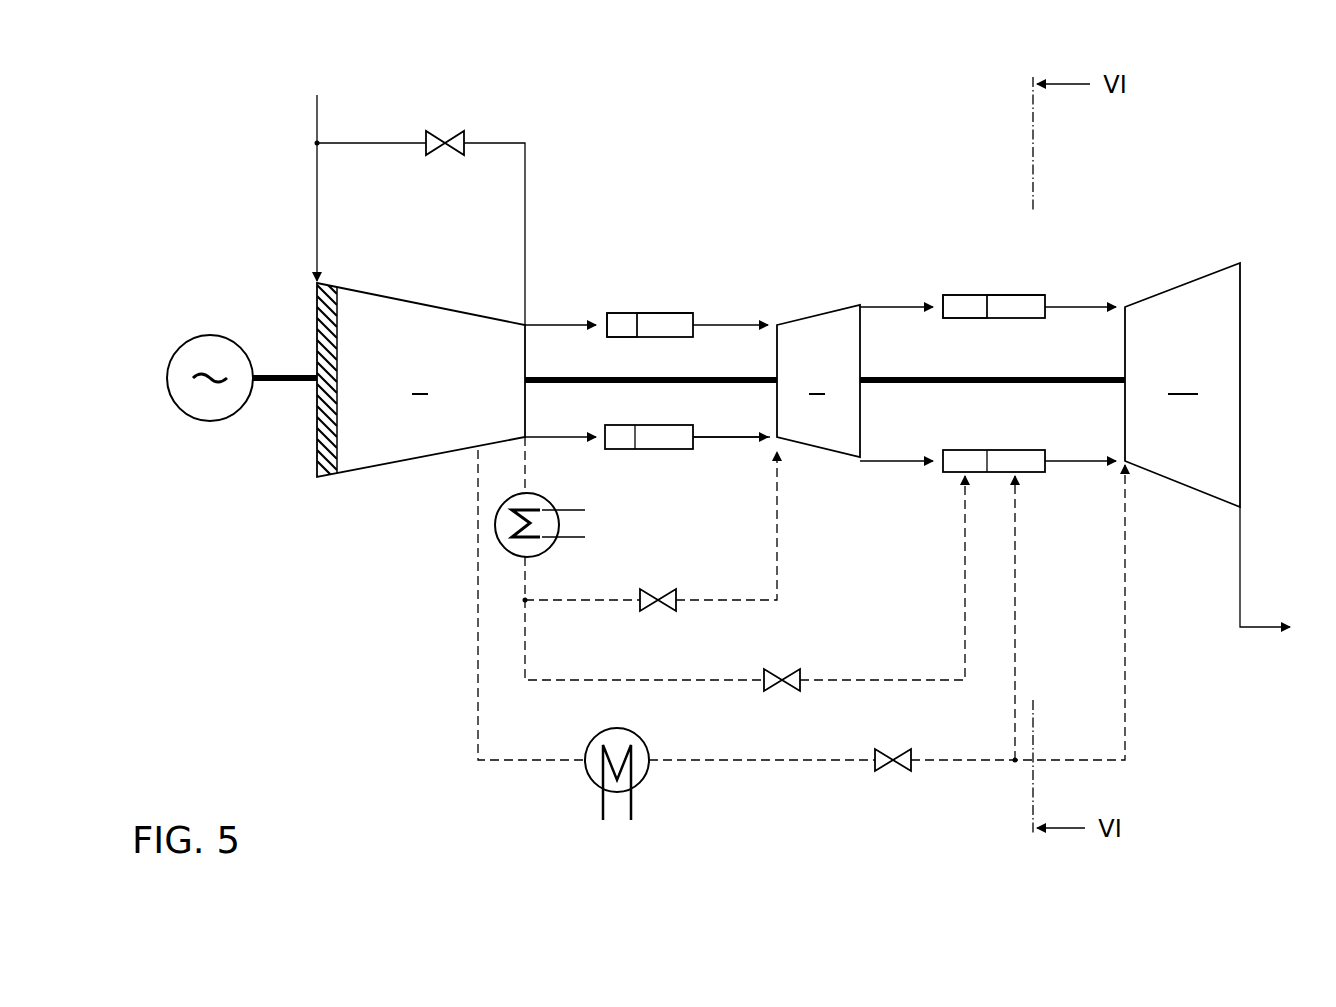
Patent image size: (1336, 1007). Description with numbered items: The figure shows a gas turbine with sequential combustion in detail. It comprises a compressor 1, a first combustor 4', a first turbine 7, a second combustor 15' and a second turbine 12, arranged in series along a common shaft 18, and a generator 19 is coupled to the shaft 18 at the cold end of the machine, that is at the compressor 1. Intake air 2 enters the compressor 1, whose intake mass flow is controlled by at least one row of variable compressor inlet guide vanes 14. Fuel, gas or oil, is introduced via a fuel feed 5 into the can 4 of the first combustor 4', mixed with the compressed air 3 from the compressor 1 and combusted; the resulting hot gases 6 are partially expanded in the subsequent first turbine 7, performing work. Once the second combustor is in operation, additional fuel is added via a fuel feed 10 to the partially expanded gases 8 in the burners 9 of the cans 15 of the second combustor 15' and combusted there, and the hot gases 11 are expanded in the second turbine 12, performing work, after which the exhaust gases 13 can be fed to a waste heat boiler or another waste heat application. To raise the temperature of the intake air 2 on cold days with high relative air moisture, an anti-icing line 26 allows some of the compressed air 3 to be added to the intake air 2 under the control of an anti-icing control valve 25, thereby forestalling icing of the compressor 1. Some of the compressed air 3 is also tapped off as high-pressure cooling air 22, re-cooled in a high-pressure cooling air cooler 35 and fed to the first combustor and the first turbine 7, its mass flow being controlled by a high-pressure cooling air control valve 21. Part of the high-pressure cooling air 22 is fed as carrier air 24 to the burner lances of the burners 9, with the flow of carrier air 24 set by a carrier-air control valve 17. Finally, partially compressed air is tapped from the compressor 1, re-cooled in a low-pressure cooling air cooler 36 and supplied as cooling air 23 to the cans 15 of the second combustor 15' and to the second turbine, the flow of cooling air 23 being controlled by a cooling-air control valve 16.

The compressor 1 is at (421, 380).
The intake air 2 is at (315, 203).
The compressed air 3 is at (567, 440).
The can 4 is at (699, 293).
The first combustor 4' is at (696, 231).
The fuel feed 5 is at (651, 310).
The hot gases 6 is at (730, 437).
The first turbine 7 is at (818, 381).
The partially expanded gases 8 is at (897, 461).
The burners 9 is at (630, 325).
The fuel feed 10 is at (965, 292).
The hot gases 11 is at (1077, 461).
The second turbine 12 is at (1182, 385).
The exhaust gases 13 is at (1288, 575).
The variable compressor inlet guide vanes 14 is at (328, 357).
The cans 15 is at (1035, 343).
The second combustor 15' is at (1052, 228).
The cooling-air control valve 16 is at (893, 768).
The carrier-air control valve 17 is at (782, 688).
The shaft 18 is at (282, 384).
The generator 19 is at (210, 400).
The high-pressure cooling air control valve 21 is at (658, 606).
The high-pressure cooling air 22 is at (522, 575).
The cooling air 23 is at (1128, 712).
The carrier air 24 is at (915, 683).
The anti-icing control valve 25 is at (446, 141).
The anti-icing line 26 is at (375, 143).
The high-pressure cooling air cooler 35 is at (508, 522).
The low-pressure cooling air cooler 36 is at (597, 765).